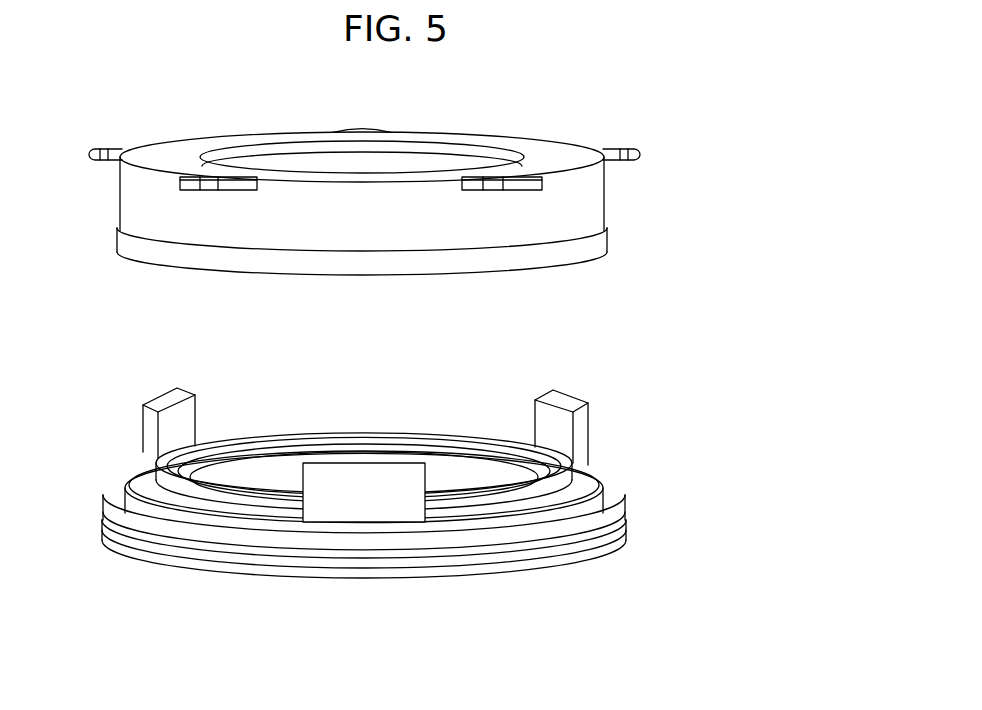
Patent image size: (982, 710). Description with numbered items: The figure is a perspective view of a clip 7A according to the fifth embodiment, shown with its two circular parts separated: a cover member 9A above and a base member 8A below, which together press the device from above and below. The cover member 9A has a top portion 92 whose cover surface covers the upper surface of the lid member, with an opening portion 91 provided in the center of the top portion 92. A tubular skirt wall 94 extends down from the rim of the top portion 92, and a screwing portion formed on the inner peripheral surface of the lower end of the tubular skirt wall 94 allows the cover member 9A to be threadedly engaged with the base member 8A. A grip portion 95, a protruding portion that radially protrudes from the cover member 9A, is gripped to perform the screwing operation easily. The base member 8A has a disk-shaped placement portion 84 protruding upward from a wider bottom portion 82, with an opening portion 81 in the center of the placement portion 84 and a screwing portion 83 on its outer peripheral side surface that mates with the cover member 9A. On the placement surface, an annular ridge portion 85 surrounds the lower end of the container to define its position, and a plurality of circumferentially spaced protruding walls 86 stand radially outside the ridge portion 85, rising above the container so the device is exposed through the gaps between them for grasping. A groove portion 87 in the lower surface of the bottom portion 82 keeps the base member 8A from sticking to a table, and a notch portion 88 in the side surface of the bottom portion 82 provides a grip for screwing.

The clip 7A is at (790, 197).
The cover member 9A is at (692, 200).
The base member 8A is at (692, 414).
The top portion 92 is at (171, 157).
The opening portion 91 is at (376, 162).
The tubular skirt wall 94 is at (122, 185).
The grip portion 95 is at (613, 157).
The opening portion 81 is at (442, 497).
The bottom portion 82 is at (560, 560).
The screwing portion 83 is at (125, 499).
The placement portion 84 is at (177, 472).
The ridge portion 85 is at (573, 465).
The protruding walls 86 is at (143, 405).
The groove portion 87 is at (363, 580).
The notch portion 88 is at (625, 518).